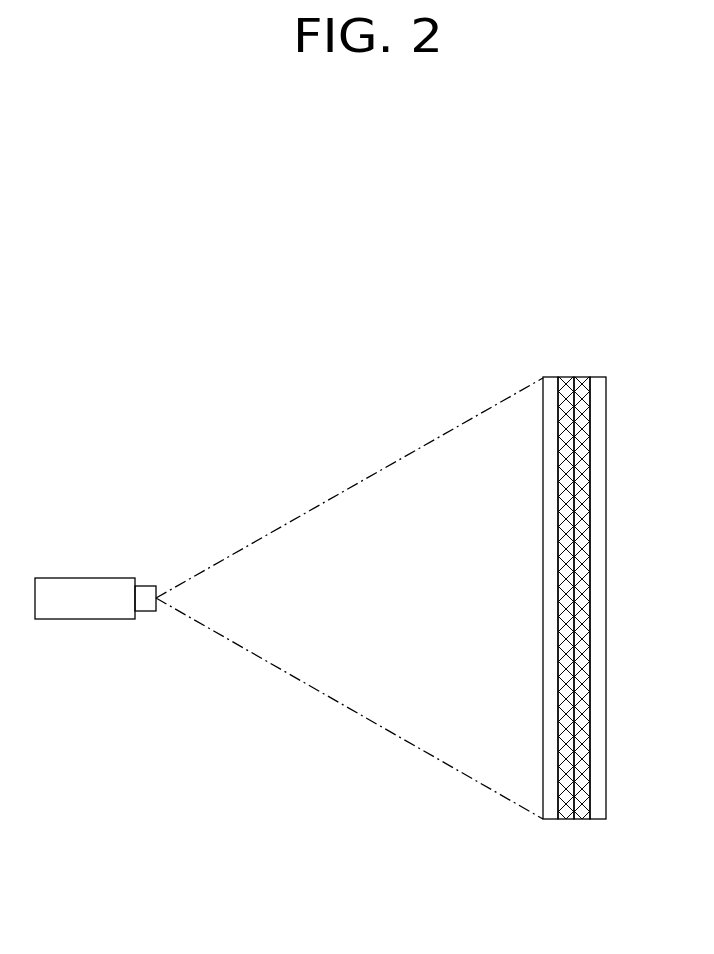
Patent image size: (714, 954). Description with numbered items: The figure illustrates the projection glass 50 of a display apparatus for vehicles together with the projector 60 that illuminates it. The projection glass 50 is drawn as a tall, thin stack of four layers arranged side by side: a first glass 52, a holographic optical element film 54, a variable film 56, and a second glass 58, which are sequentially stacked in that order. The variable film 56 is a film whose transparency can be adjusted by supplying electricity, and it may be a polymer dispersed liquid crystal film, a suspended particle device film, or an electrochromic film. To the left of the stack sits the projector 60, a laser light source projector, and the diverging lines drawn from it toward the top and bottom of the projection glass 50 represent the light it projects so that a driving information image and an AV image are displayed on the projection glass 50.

The projection glass 50 is at (585, 525).
The first glass 52 is at (552, 386).
The holographic optical element (HOE) film 54 is at (568, 386).
The variable film 56 is at (585, 384).
The second glass 58 is at (625, 543).
The projector 60 is at (88, 588).